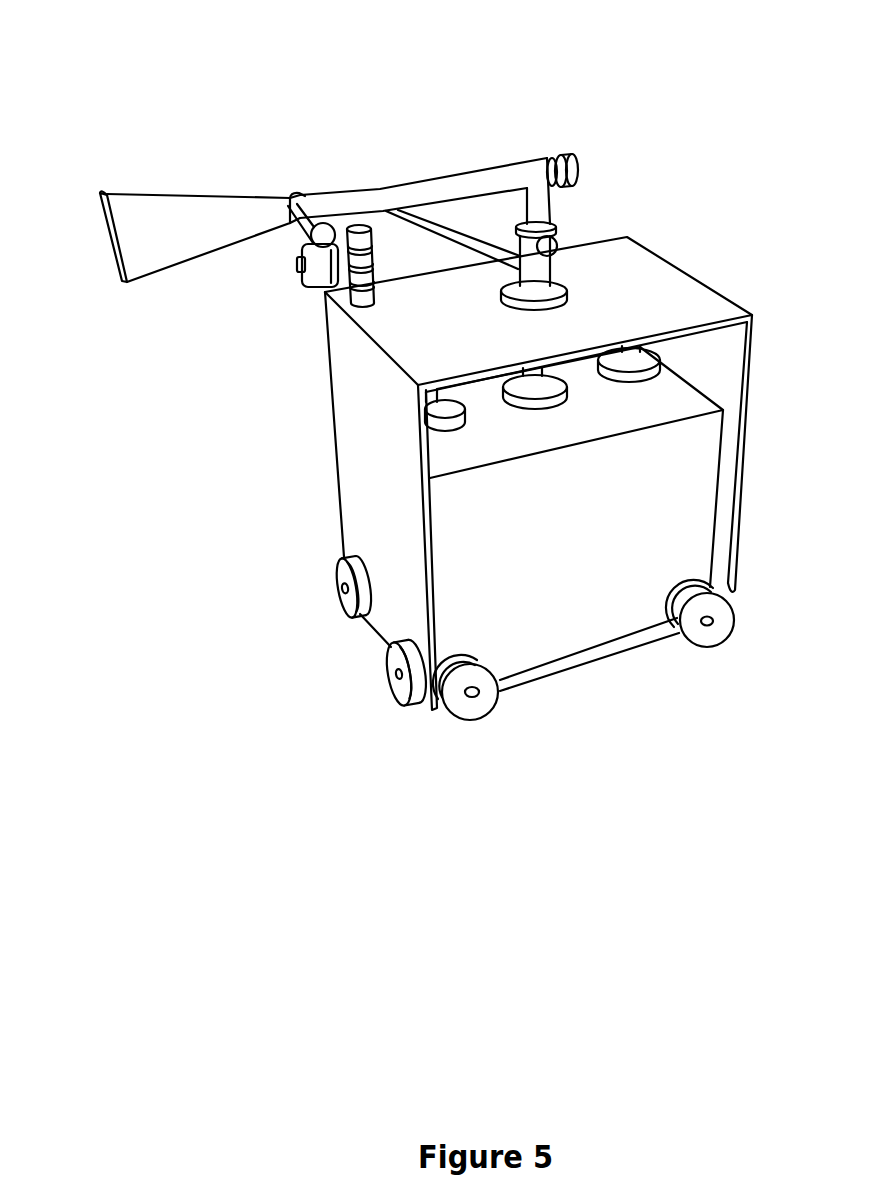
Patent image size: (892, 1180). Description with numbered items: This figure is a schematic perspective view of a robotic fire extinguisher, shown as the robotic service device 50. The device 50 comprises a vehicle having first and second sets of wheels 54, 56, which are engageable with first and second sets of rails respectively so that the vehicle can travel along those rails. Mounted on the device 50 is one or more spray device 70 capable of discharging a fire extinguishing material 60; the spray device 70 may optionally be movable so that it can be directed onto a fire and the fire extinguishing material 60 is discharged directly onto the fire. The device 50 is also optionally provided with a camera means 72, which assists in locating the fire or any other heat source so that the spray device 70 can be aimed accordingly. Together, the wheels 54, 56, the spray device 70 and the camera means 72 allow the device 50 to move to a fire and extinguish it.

The robotic service device 50 is at (685, 185).
The first set of wheels 54 is at (353, 615).
The second set of wheels 56 is at (472, 717).
The fire extinguishing material 60 is at (547, 613).
The spray device 70 is at (153, 255).
The camera means 72 is at (309, 290).